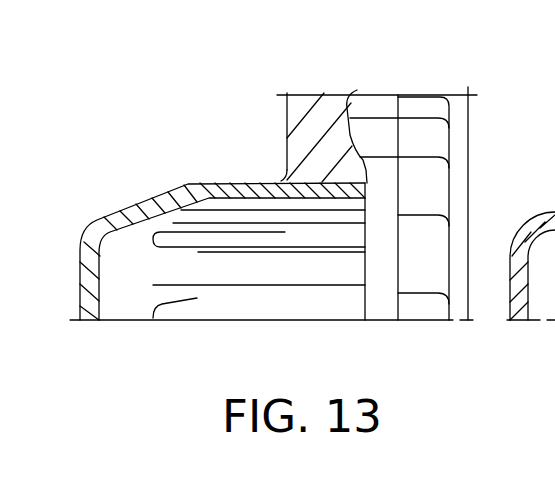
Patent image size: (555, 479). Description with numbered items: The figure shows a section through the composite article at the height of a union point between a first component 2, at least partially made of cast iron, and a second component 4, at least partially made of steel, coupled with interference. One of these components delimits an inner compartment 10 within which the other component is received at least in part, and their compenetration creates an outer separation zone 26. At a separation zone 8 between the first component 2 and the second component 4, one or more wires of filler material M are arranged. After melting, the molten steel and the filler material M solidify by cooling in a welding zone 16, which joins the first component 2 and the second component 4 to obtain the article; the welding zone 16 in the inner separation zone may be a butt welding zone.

The first component 2 is at (276, 114).
The second component 4 is at (130, 195).
The separation zone 8 is at (316, 170).
The inner compartment 10 is at (378, 288).
The welding zone 16 is at (388, 177).
The outer separation zone 26 is at (265, 172).
The filler material M is at (370, 189).